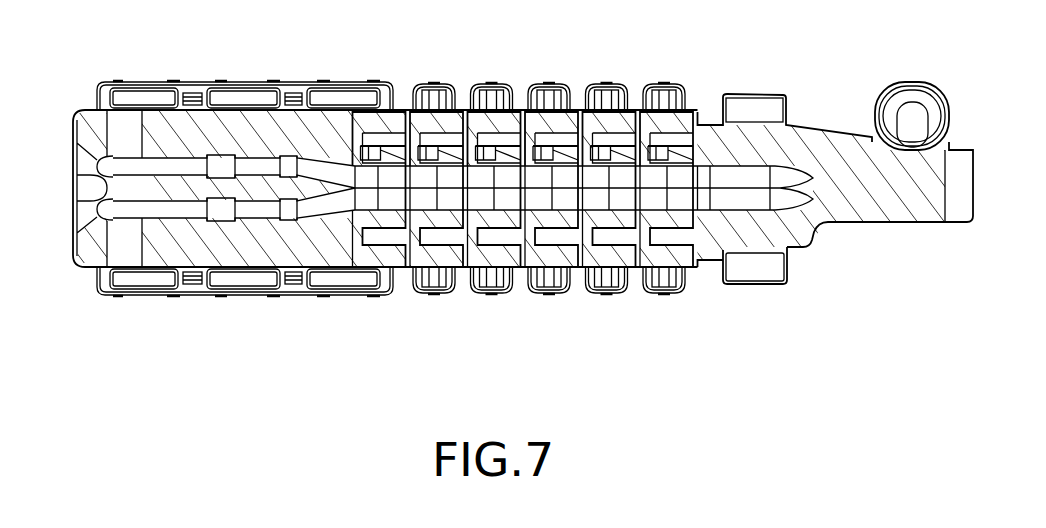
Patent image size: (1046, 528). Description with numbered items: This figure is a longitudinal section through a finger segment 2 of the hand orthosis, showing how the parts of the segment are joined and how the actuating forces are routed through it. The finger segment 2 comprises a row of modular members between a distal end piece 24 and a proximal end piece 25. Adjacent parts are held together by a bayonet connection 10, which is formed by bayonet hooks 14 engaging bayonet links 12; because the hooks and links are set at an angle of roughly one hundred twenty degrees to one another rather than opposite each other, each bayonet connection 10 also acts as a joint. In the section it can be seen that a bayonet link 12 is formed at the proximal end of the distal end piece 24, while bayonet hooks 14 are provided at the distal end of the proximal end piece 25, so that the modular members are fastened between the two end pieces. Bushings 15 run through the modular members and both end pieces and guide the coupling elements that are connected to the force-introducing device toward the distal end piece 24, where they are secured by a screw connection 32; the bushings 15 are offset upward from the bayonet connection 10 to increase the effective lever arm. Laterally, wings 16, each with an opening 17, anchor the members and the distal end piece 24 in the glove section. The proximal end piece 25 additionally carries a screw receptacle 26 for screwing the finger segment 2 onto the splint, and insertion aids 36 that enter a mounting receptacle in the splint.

The finger segment 2 is at (756, 318).
The bayonet connection 10 is at (440, 150).
The bayonet link 12 is at (383, 150).
The bayonet hook 14 is at (618, 150).
The bushing 15 is at (733, 180).
The wing 16 is at (193, 282).
The opening 17 is at (140, 100).
The distal end piece 24 is at (232, 130).
The proximal end piece 25 is at (855, 170).
The screw receptacle 26 is at (908, 112).
The screw connection 32 is at (120, 172).
The insertion aid 36 is at (767, 265).